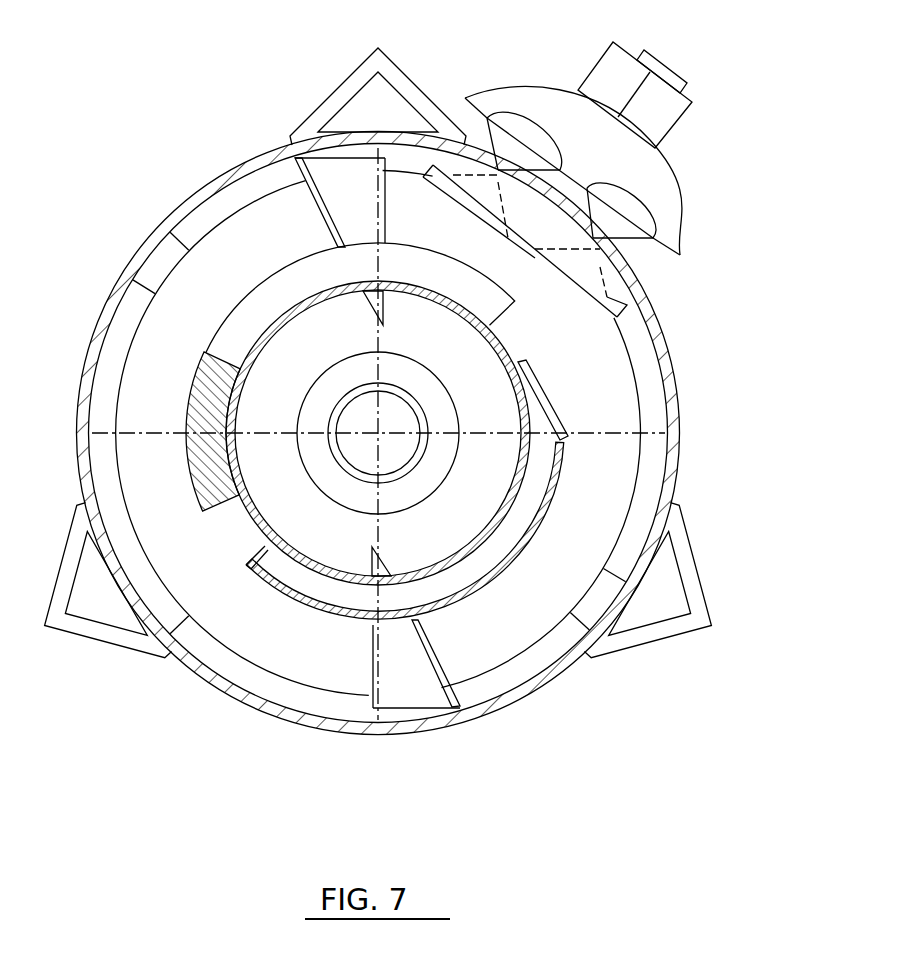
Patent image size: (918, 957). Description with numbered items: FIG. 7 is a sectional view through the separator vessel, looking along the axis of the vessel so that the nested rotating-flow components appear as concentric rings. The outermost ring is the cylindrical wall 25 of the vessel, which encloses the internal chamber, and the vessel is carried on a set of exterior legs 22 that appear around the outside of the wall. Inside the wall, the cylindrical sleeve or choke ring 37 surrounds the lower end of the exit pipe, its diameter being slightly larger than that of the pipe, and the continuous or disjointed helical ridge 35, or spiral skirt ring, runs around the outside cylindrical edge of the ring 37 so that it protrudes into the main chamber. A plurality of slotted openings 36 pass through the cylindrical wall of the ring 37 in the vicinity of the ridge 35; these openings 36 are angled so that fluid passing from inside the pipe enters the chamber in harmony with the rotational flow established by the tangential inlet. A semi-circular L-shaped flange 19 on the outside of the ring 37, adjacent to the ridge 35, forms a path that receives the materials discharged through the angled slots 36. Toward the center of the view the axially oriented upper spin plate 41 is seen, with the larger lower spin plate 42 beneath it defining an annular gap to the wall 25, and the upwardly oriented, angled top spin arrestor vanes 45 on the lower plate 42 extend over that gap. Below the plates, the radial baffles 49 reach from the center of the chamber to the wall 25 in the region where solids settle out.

The semi-circular L-shaped flange 19 is at (541, 526).
The exterior legs 22 is at (694, 572).
The cylindrical wall 25 is at (683, 393).
The helical ridge 35 is at (235, 318).
The slotted openings 36 is at (528, 421).
The choke ring 37 is at (503, 350).
The upper spin plate 41 is at (397, 417).
The lower spin plate 42 is at (468, 640).
The top spin arrestor vanes 45 is at (412, 682).
The baffles 49 is at (212, 655).